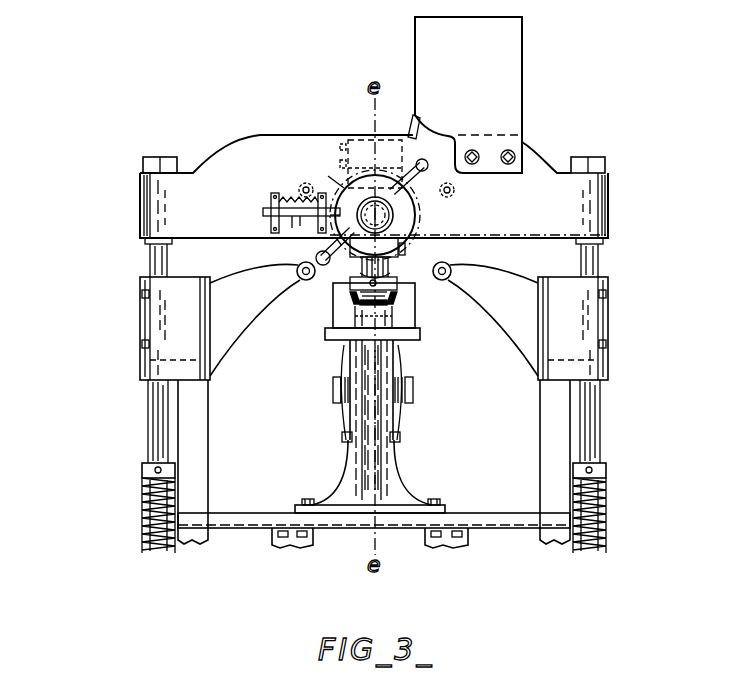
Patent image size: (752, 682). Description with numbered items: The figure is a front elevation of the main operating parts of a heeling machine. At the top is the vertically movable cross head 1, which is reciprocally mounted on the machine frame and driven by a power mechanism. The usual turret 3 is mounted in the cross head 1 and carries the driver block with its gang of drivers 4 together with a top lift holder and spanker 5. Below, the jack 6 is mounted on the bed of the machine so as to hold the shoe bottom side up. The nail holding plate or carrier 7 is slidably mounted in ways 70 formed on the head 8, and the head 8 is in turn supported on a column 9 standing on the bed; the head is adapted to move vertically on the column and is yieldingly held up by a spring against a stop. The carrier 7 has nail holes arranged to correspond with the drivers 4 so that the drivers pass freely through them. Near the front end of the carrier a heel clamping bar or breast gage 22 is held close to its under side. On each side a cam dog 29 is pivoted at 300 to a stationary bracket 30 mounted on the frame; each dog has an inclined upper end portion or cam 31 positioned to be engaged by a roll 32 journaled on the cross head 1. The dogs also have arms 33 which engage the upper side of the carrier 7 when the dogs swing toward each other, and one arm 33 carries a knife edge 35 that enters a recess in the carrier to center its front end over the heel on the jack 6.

The cross head 1 is at (245, 152).
The turret 3 is at (378, 215).
The drivers 4 is at (336, 285).
The top lift holder and spanker 5 is at (358, 140).
The jack 6 is at (373, 420).
The nail holding plate or carrier 7 is at (352, 296).
The head 8 is at (343, 372).
The column 9 is at (347, 453).
The heel clamping bar or breast gage 22 is at (357, 313).
The cam dogs 29 is at (337, 186).
The stationary brackets 30 is at (240, 285).
The cam 31 is at (300, 186).
The rolls 32 is at (295, 191).
The arms 33 is at (402, 262).
The knife edge 35 is at (390, 276).
The ways 70 is at (400, 293).
The pivot 300 is at (296, 278).